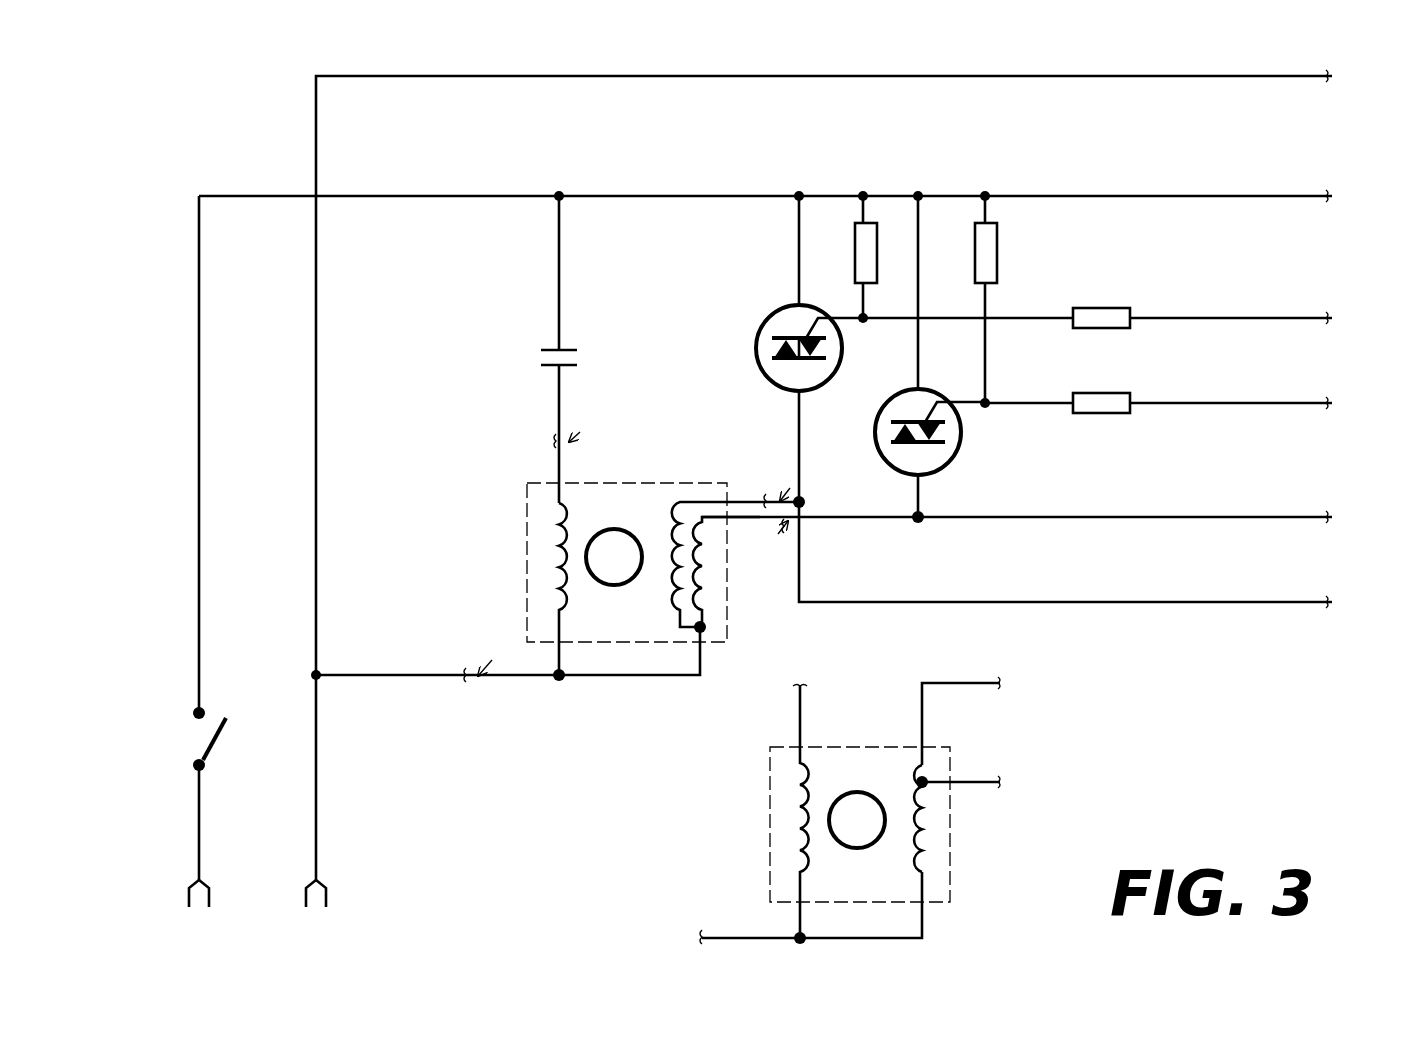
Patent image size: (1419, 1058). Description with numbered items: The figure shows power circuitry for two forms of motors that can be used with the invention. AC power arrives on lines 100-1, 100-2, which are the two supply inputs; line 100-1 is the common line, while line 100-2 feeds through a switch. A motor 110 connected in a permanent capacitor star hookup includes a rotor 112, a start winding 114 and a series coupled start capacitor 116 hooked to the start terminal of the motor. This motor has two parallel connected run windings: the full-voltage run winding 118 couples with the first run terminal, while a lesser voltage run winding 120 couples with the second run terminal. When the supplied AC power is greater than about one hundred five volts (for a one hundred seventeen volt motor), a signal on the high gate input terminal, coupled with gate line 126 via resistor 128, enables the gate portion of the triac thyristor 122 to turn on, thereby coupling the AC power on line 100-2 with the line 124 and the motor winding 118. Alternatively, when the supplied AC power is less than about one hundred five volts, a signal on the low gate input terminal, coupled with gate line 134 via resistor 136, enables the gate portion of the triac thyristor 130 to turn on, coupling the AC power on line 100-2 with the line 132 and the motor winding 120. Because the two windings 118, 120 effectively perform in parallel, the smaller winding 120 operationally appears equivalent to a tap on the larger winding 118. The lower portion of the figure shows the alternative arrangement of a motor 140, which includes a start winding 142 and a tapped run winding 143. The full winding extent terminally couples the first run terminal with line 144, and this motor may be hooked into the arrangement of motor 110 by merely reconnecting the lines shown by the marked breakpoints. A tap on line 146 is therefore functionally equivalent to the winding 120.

The line 100-1 is at (1218, 78).
The line 100-2 is at (1168, 176).
The motor 110 is at (560, 543).
The rotor 112 is at (618, 526).
The start winding 114 is at (555, 563).
The start capacitor 116 is at (525, 356).
The RUN winding 118 is at (686, 502).
The RUN winding 120 is at (704, 558).
The triac thyristor 122 is at (762, 332).
The line 124 is at (795, 430).
The gate line 126 is at (1018, 314).
The resistor 128 is at (1108, 308).
The triac thyristor 130 is at (962, 455).
The line 132 is at (862, 502).
The gate line 134 is at (1020, 400).
The resistor 136 is at (1117, 393).
The motor 140 is at (845, 795).
The start winding 142 is at (792, 782).
The tapped RUN winding 143 is at (922, 848).
The line 144 is at (940, 680).
The line 146 is at (990, 778).